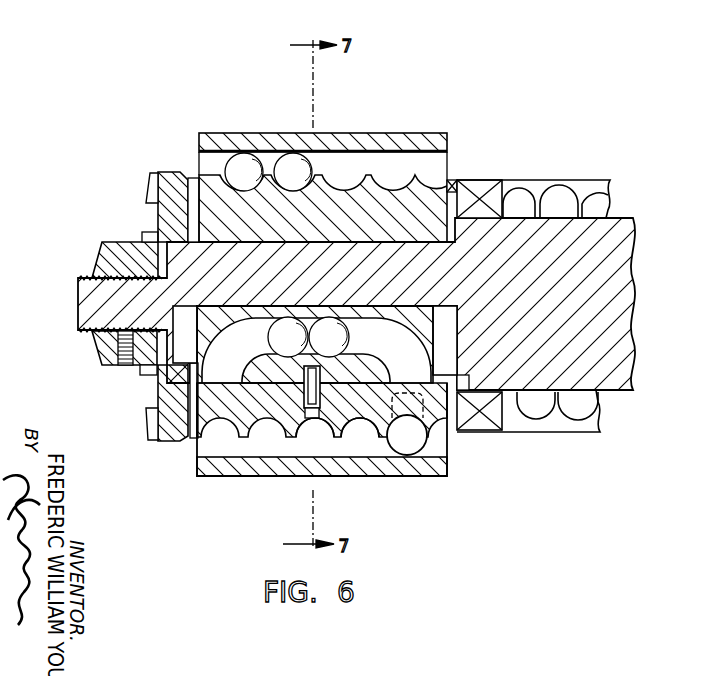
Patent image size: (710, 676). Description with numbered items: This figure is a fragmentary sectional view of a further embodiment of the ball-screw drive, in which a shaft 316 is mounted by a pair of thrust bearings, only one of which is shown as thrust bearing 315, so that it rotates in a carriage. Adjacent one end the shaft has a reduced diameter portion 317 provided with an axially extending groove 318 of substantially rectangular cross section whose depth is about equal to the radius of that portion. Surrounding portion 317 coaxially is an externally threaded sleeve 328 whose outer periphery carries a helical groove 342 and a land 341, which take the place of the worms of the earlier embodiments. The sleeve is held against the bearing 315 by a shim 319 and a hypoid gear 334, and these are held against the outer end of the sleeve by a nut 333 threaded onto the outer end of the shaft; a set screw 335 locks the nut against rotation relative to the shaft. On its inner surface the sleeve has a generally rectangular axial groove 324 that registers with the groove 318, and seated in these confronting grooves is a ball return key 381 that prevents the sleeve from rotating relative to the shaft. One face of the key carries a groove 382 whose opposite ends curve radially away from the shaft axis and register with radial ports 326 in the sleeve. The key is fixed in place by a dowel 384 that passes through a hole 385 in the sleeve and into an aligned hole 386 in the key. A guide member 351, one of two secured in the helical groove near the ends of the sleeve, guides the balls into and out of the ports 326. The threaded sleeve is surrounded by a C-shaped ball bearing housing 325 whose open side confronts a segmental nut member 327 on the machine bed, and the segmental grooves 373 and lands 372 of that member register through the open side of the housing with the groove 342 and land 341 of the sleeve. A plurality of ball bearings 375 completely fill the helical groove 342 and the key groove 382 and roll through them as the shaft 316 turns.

The thrust bearing 315 is at (492, 180).
The shaft 316 is at (626, 222).
The reduced diameter portion 317 is at (376, 240).
The axially extending slot or groove 318 is at (449, 340).
The shim 319 is at (192, 183).
The axially extending groove or slot 324 is at (468, 384).
The C-shaped ball bearing housing 325 is at (395, 137).
The radial ports 326 is at (218, 412).
The segmental nut member 327 is at (586, 178).
The externally threaded sleeve 328 is at (456, 183).
The nut 333 is at (100, 253).
The hypoid gear 334 is at (152, 180).
The set screw 335 is at (117, 348).
The land 341 is at (358, 140).
The helical groove 342 is at (443, 137).
The guide member 351 is at (424, 448).
The lands 372 is at (597, 405).
The segmental grooves 373 is at (538, 418).
The ball bearings 375 is at (287, 152).
The ball return key 381 is at (440, 310).
The groove 382 is at (372, 320).
The dowel 384 is at (310, 418).
The hole 385 is at (338, 375).
The hole 386 is at (362, 388).